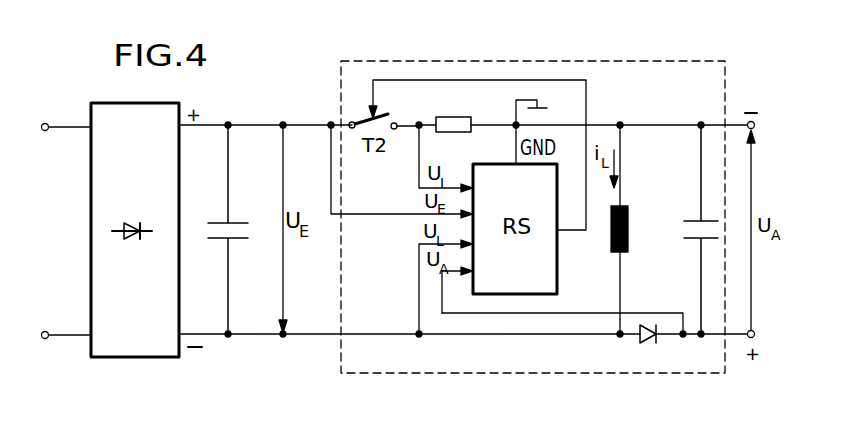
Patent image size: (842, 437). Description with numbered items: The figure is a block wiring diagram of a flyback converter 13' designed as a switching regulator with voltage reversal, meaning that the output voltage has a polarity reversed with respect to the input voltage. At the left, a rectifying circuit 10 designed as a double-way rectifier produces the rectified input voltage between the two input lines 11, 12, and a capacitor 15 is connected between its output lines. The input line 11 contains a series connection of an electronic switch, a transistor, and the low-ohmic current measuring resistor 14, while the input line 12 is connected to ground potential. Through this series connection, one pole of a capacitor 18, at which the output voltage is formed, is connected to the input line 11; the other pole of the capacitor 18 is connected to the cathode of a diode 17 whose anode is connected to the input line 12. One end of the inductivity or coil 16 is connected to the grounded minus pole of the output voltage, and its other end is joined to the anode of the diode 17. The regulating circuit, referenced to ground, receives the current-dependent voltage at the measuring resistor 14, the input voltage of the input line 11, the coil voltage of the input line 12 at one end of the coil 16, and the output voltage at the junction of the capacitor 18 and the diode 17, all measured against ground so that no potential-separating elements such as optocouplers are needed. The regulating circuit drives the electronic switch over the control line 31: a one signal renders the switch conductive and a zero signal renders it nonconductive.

The rectifying circuit 10 is at (140, 345).
The input line 11 is at (305, 118).
The input line 12 is at (311, 338).
The flyback converter 13' is at (533, 243).
The current measuring resistor 14 is at (441, 117).
The capacitor 15 is at (217, 241).
The inductivity (coil) 16 is at (629, 228).
The diode 17 is at (645, 343).
The capacitor 18 is at (694, 219).
The control line 31 is at (587, 99).